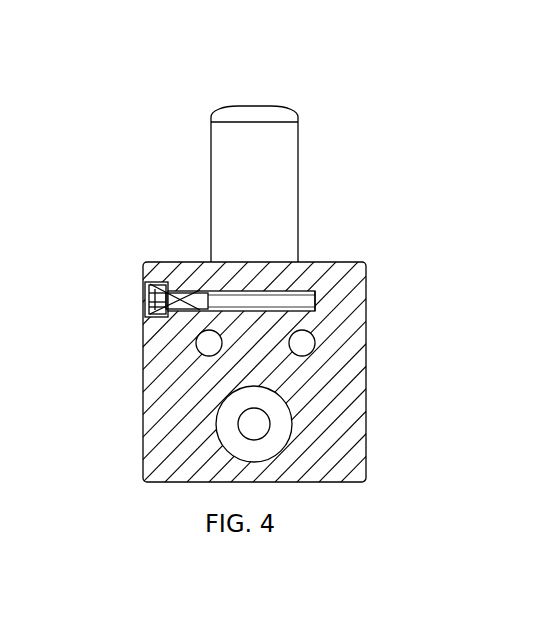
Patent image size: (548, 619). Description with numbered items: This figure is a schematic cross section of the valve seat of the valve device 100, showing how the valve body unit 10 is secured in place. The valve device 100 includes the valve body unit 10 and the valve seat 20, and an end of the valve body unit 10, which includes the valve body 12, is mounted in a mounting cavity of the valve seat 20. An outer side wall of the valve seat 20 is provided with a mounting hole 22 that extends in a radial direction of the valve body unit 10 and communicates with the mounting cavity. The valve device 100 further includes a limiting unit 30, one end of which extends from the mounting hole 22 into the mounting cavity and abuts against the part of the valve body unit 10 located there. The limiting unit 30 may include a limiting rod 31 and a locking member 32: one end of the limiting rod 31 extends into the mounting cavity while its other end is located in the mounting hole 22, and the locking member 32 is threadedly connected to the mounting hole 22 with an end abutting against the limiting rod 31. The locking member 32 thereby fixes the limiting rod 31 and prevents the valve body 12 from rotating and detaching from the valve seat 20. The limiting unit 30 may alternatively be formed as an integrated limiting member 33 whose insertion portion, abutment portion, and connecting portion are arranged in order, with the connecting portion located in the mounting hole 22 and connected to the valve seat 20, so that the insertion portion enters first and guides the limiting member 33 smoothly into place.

The valve device 100 is at (260, 78).
The valve body unit 10 is at (310, 147).
The valve body 12 is at (277, 207).
The valve seat 20 is at (342, 392).
The mounting hole 22 is at (147, 295).
The limiting unit 30 is at (141, 283).
The limiting rod 31 is at (253, 300).
The locking member 32 is at (150, 289).
The limiting member 33 is at (293, 299).